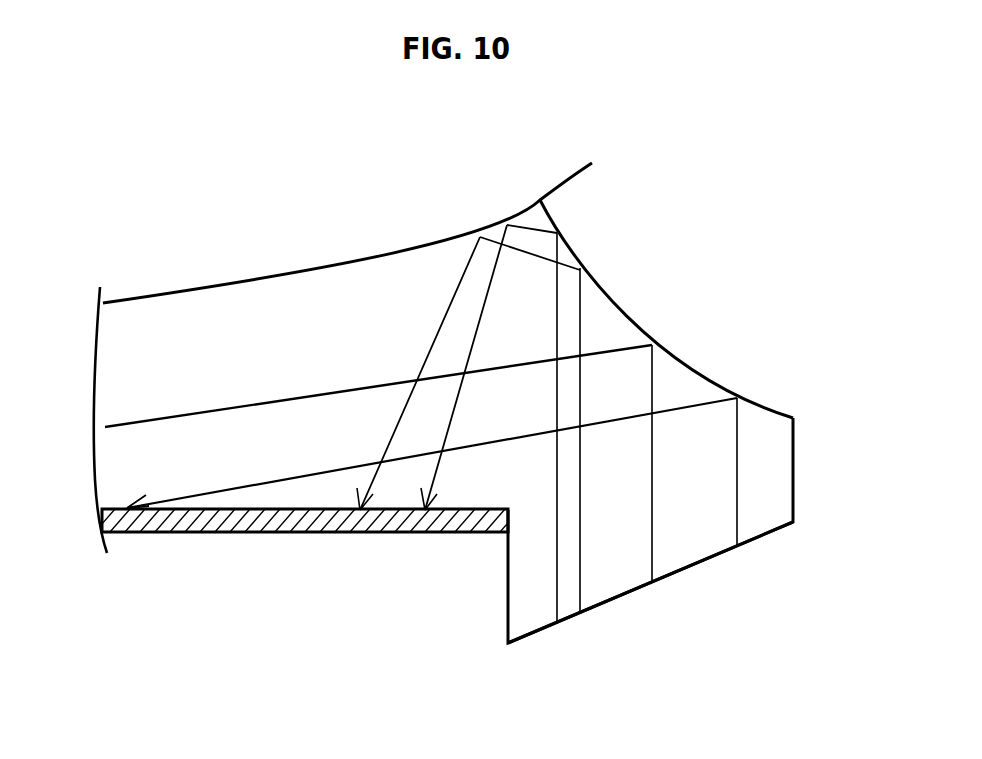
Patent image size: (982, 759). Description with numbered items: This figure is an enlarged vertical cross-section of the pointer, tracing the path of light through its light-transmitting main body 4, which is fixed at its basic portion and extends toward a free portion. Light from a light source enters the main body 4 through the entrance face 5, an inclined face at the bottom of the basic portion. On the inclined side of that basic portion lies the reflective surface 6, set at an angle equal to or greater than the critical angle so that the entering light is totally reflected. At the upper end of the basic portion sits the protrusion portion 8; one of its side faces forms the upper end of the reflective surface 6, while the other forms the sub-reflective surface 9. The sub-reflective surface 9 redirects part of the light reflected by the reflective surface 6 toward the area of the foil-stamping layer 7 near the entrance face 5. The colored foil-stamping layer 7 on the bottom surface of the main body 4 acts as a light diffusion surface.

The main body 4 is at (229, 306).
The entrance face 5 is at (698, 565).
The reflective surface 6 is at (615, 307).
The foil-stamping layer 7 is at (272, 533).
The protrusion portion 8 is at (541, 200).
The sub-reflective surface 9 is at (488, 222).